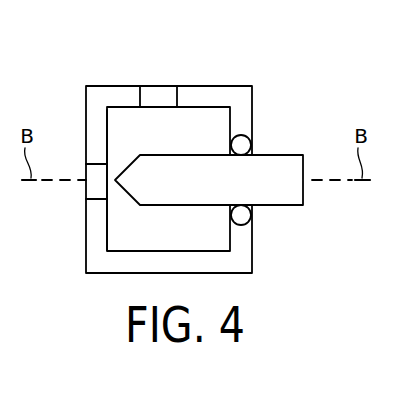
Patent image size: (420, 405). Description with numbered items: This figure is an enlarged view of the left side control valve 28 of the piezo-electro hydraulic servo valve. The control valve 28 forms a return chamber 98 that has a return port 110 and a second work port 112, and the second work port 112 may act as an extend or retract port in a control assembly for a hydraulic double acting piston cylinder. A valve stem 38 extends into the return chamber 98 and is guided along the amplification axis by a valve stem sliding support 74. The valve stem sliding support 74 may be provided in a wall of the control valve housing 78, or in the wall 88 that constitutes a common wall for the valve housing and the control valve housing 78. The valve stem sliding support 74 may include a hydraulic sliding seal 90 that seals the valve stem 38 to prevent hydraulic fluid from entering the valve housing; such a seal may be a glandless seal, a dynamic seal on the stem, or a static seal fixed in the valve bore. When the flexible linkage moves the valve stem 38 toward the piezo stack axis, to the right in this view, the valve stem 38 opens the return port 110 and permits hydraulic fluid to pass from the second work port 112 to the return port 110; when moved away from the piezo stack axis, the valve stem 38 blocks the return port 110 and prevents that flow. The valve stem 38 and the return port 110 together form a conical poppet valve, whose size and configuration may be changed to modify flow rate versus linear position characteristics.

The control valve 28 is at (181, 146).
The valve stem 38 is at (203, 178).
The valve stem sliding support 74 is at (242, 113).
The control valve housing 78 is at (97, 80).
The wall 88 is at (242, 237).
The hydraulic sliding seal 90 is at (250, 143).
The return chamber 98 is at (120, 127).
The return port 110 is at (92, 191).
The second work port 112 is at (152, 88).